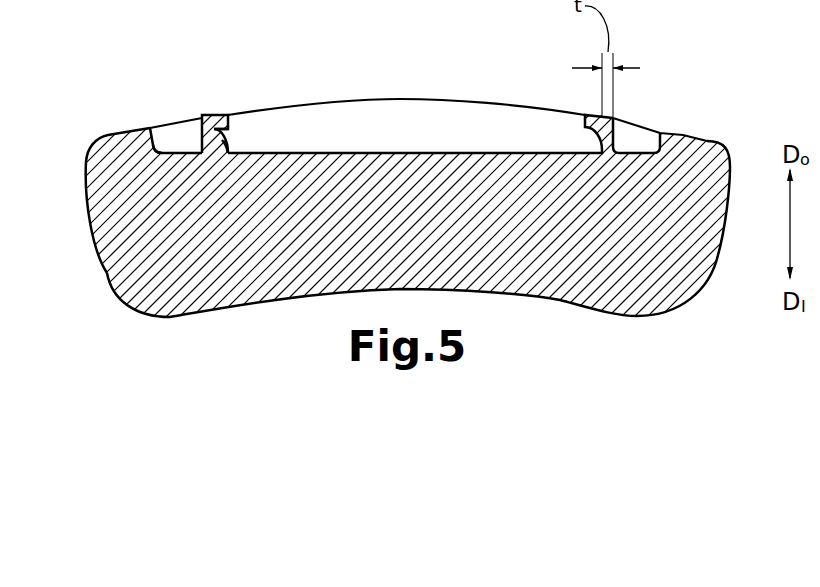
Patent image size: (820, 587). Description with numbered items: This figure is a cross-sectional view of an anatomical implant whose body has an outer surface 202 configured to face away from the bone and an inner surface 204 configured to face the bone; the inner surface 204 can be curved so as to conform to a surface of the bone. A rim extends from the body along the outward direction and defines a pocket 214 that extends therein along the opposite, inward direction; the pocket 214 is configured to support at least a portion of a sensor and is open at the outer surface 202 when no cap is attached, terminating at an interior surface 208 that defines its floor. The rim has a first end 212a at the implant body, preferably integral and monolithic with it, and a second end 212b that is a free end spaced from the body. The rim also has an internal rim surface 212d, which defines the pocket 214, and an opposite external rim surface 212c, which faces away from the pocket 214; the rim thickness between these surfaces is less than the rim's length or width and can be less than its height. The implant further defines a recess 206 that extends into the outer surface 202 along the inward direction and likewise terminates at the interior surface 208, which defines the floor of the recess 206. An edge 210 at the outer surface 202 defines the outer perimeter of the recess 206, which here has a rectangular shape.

The outer surface 202 is at (683, 133).
The inner surface 204 is at (585, 307).
The recess 206 is at (638, 133).
The interior surface 208 is at (492, 155).
The edge 210 is at (151, 125).
The first end 212a is at (218, 144).
The second end 212b is at (207, 114).
The external rim surface 212c is at (160, 153).
The internal rim surface 212d is at (214, 140).
The pocket 214 is at (402, 128).